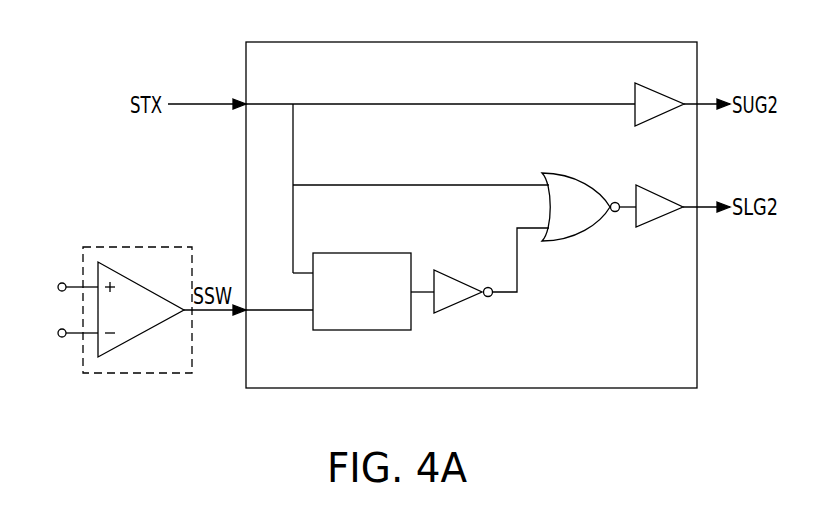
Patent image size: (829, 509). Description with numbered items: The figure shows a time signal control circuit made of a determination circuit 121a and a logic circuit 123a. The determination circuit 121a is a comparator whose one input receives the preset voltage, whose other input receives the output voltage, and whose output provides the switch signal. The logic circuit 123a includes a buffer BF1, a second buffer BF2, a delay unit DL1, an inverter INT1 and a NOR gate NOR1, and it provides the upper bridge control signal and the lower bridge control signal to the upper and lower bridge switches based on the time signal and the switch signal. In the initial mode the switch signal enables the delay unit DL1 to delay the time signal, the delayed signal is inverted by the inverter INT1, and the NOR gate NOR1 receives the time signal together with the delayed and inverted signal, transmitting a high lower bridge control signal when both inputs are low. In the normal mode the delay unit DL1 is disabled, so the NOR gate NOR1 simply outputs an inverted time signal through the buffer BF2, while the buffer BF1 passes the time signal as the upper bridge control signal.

The determination circuit 121a is at (128, 247).
The logic circuit 123a is at (503, 42).
The delay unit DL1 is at (360, 330).
The inverter INT1 is at (460, 306).
The NOR gate NOR1 is at (577, 241).
The buffer BF1 is at (660, 114).
The buffer BF2 is at (660, 218).